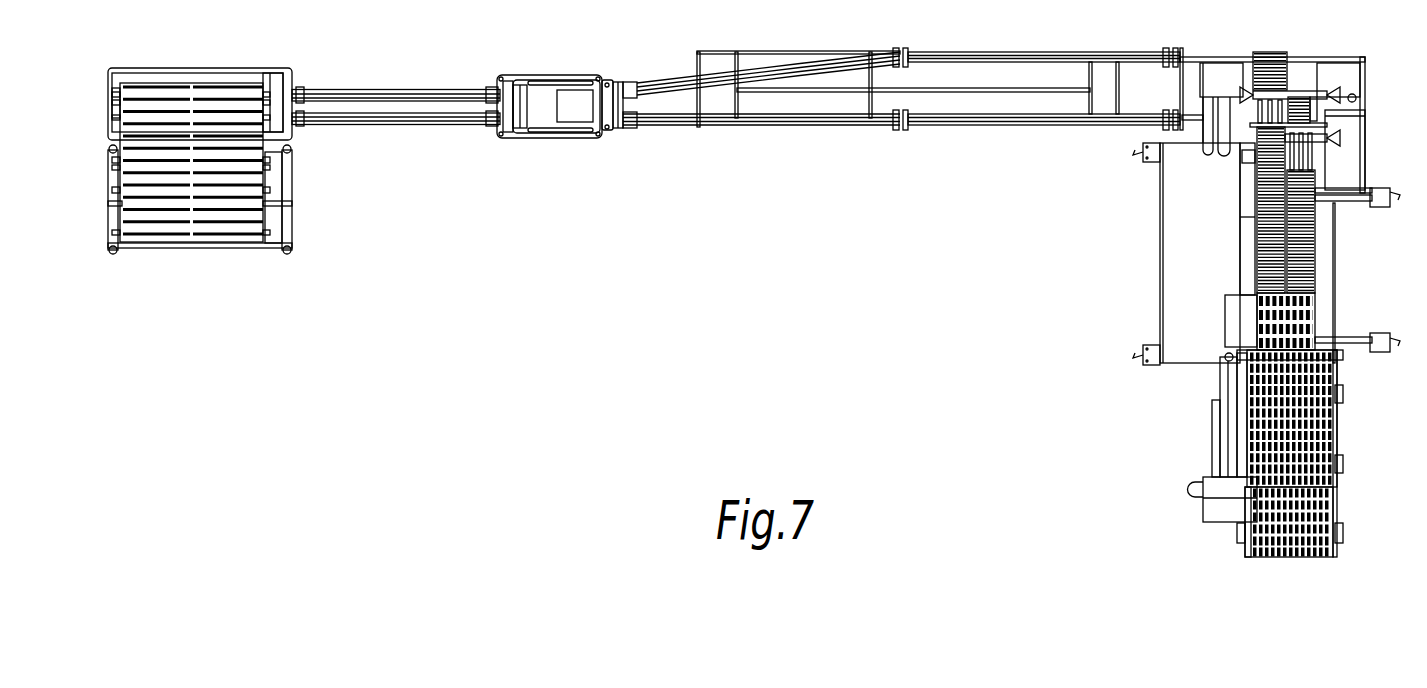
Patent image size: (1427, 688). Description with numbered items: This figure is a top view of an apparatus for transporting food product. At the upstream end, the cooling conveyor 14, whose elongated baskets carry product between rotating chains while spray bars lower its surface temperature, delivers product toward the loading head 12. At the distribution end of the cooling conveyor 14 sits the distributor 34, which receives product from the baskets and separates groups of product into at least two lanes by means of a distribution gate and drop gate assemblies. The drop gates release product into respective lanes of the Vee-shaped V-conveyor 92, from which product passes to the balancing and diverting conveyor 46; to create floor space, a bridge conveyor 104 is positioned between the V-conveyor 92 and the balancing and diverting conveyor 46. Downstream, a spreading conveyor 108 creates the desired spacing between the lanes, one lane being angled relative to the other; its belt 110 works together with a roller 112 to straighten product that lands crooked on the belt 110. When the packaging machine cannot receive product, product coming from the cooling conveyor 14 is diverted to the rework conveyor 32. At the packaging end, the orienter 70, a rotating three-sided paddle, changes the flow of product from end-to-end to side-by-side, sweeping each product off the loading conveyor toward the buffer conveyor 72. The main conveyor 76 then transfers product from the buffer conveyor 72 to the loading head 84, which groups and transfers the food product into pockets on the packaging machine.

The loading head 12 is at (1360, 436).
The cooling conveyor 14 is at (293, 180).
The rework conveyor 32 is at (703, 93).
The distributor 34 is at (110, 86).
The balancing and diverting conveyor 46 is at (560, 75).
The orienter 70 is at (1303, 98).
The buffer conveyor 72 is at (1330, 163).
The main conveyor 76 is at (1316, 258).
The loading head 84 is at (1268, 557).
The V-conveyor 92 is at (155, 82).
The bridge conveyor 104 is at (372, 90).
The spreading conveyor 108 is at (1030, 52).
The belt 110 is at (840, 63).
The roller 112 is at (780, 68).